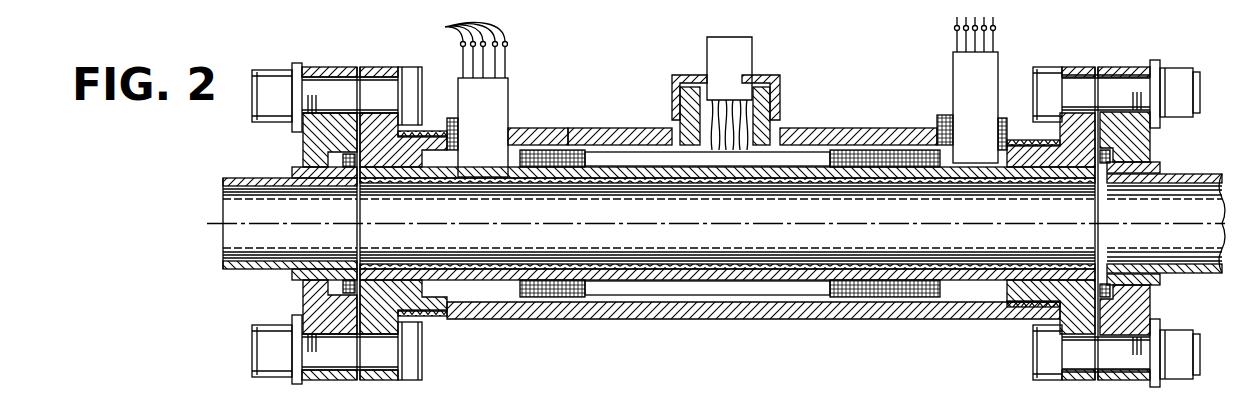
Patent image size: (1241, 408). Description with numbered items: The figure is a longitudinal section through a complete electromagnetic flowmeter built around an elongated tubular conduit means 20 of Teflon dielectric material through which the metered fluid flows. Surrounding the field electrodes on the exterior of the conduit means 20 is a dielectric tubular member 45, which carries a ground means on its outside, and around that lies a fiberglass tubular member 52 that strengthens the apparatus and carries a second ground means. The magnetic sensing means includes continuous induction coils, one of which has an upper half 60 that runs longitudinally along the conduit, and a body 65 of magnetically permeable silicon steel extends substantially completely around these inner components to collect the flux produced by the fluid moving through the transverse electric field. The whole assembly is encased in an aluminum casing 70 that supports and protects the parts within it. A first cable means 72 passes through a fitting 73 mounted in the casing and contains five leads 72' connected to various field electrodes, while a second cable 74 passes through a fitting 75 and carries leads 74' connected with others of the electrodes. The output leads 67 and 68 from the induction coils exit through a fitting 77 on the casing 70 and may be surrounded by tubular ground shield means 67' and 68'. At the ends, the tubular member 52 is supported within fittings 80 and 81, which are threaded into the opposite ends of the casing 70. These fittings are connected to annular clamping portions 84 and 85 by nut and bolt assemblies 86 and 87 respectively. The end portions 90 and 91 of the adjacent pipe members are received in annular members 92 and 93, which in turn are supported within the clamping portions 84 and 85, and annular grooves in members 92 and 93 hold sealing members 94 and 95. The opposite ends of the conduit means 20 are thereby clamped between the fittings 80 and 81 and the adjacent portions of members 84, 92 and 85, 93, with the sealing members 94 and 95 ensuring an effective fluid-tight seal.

The tubular conduit means 20 is at (388, 186).
The tubular member 45 is at (1043, 190).
The tubular member 52 is at (626, 177).
The upper half of induction coil 60 is at (538, 128).
The body of magnetic permeable material 65 is at (613, 140).
The output lead 67 is at (692, 93).
The tubular ground shield means 67' is at (664, 113).
The output lead 68 is at (765, 90).
The tubular ground shield means 68' is at (796, 112).
The casing 70 is at (893, 128).
The first cable means 72 is at (511, 112).
The leads 72' is at (455, 47).
The fitting 73 is at (451, 118).
The cable 74 is at (1000, 88).
The leads 74' is at (945, 32).
The fitting 75 is at (1003, 113).
The fitting 77 is at (781, 79).
The fitting 80 is at (372, 50).
The fitting 81 is at (1075, 67).
The annular clamping portion 84 is at (305, 141).
The annular clamping portion 85 is at (1150, 135).
The nut and bolt assembly 86 is at (293, 66).
The nut and bolt assembly 87 is at (1159, 62).
The end portion of pipe member 90 is at (235, 178).
The end portion of pipe member 91 is at (1196, 174).
The annular member 92 is at (350, 188).
The annular member 93 is at (1104, 185).
The sealing member 94 is at (368, 188).
The sealing member 95 is at (1092, 262).